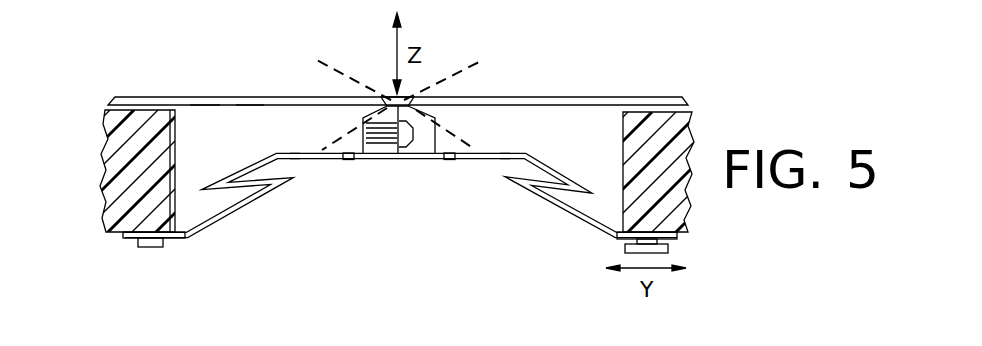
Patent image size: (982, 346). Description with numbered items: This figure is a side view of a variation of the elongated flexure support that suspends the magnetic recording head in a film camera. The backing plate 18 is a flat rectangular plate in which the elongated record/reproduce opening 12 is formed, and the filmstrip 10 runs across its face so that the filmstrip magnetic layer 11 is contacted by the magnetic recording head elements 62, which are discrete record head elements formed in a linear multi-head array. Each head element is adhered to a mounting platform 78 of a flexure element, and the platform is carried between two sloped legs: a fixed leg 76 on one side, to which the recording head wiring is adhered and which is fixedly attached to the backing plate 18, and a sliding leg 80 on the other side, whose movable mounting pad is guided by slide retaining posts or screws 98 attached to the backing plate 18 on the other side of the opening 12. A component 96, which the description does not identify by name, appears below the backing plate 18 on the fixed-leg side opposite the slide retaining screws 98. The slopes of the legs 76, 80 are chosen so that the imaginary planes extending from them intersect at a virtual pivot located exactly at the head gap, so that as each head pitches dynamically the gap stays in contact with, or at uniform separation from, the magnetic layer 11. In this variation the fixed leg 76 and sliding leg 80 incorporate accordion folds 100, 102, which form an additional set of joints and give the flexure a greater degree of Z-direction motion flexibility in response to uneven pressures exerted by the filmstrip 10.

The filmstrip 10 is at (582, 98).
The filmstrip magnetic layer 11 is at (250, 106).
The elongated record/reproduce opening 12 is at (205, 113).
The backing plate 18 is at (103, 190).
The magnetic recording head elements 62 is at (438, 107).
The fixed legs 76 is at (187, 238).
The mounting platforms 78 is at (408, 160).
The sliding legs 80 is at (608, 240).
The left contact feet 96 is at (150, 247).
The slide retaining posts or screws 98 is at (668, 248).
The accordion folds 100 is at (283, 170).
The accordion folds 102 is at (513, 170).